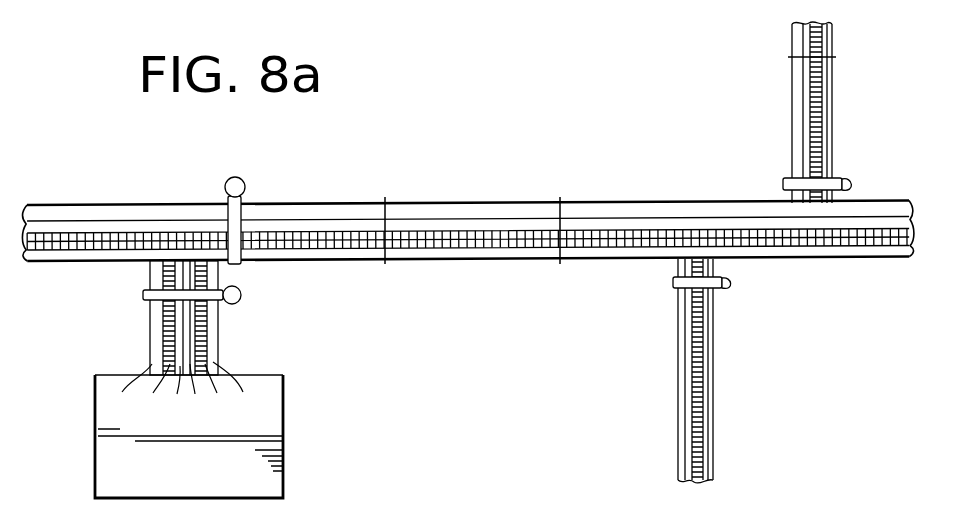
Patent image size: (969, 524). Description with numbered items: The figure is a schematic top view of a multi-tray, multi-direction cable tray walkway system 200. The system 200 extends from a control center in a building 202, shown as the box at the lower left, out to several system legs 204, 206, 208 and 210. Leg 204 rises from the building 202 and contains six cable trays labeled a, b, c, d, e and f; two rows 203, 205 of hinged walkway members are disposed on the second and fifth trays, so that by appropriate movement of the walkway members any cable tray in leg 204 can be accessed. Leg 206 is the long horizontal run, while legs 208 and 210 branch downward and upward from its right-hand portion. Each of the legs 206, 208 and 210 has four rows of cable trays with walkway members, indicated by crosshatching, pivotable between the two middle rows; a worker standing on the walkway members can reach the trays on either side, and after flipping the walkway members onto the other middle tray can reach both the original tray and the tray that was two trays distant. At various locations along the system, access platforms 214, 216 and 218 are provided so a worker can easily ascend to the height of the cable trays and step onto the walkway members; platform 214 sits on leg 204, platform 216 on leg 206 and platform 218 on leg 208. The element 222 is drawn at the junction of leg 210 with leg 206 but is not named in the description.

The cable tray system 200 is at (385, 263).
The building 202 is at (284, 476).
The row of hinged walkway members 203 is at (163, 352).
The system leg 204 is at (185, 318).
The row of hinged walkway members 205 is at (200, 346).
The system leg 206 is at (497, 260).
The system leg 208 is at (713, 362).
The system leg 210 is at (832, 140).
The access platform 214 is at (145, 293).
The access platform 216 is at (245, 188).
The access platform 218 is at (734, 288).
The clamp 222 is at (783, 183).